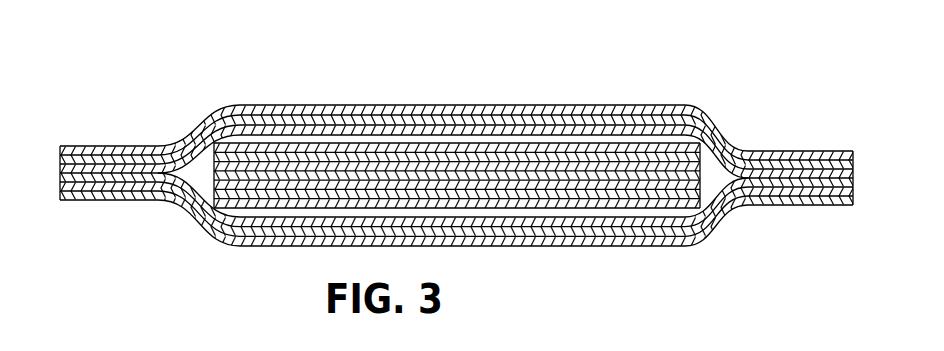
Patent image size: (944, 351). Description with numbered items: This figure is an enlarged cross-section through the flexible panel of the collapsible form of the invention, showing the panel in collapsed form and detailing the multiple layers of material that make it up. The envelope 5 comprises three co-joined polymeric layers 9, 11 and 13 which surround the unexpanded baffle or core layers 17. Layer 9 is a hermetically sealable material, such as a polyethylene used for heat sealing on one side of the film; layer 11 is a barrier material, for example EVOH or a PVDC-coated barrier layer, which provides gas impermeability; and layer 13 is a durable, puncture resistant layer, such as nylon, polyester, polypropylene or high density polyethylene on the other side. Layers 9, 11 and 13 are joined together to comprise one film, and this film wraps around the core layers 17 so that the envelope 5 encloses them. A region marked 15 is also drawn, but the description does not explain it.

The envelope 5 is at (295, 66).
The hermetically sealable layer 9 is at (499, 100).
The barrier layer 11 is at (560, 100).
The puncture resistant layer 13 is at (782, 142).
The void between layers 15 is at (190, 165).
The core layers 17 is at (685, 98).